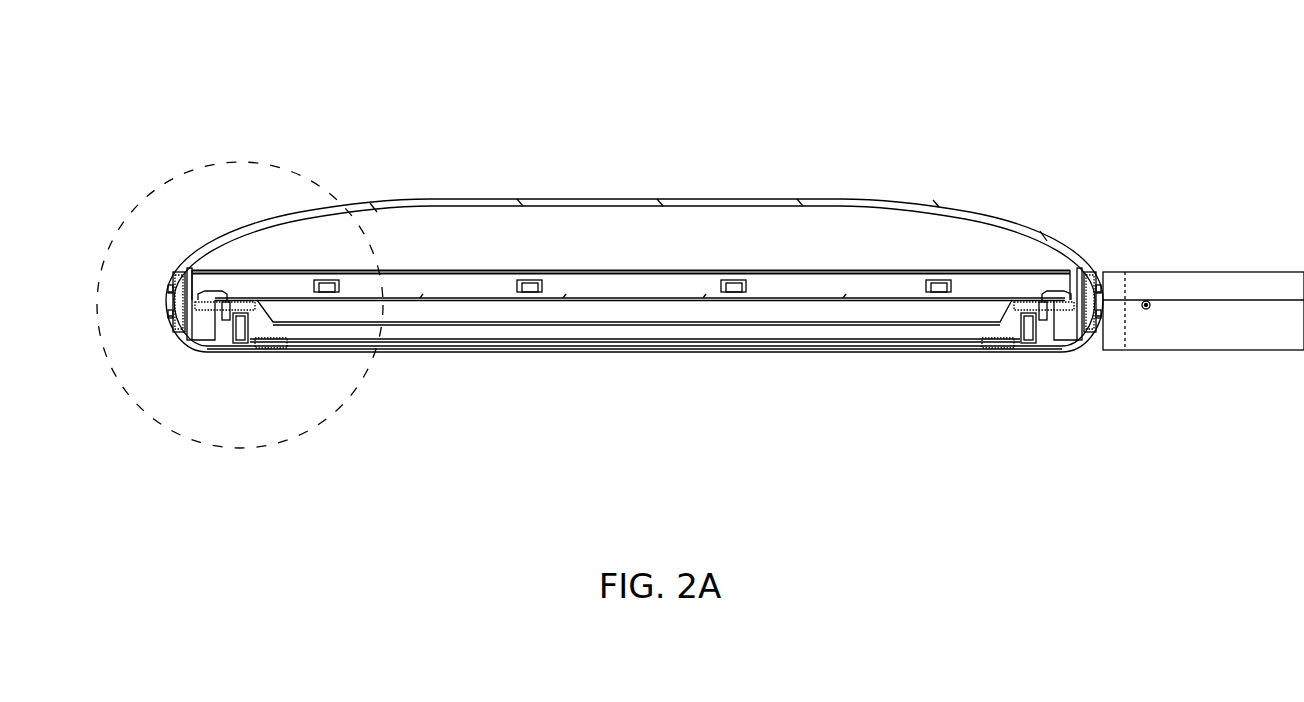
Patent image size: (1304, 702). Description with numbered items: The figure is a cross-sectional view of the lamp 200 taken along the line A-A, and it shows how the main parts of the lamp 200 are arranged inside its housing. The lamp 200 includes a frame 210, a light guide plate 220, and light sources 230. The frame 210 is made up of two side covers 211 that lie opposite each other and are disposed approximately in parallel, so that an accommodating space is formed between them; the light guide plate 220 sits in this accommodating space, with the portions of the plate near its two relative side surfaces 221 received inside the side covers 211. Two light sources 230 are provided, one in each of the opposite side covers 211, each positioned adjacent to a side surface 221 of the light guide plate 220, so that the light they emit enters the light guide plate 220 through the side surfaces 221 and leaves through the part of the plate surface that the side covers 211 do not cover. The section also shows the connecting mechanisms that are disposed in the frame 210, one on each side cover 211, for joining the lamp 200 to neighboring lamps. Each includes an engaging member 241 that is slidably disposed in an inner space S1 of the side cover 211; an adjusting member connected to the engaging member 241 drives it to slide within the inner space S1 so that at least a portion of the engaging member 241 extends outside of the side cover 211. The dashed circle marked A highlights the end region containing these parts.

The lamp 200 is at (108, 52).
The line A- A is at (118, 240).
The inner space S1 is at (172, 307).
The engaging member 241 is at (182, 320).
The frame 210 is at (189, 366).
The side covers 211 is at (215, 347).
The side surfaces 221 is at (283, 335).
The light source 230 is at (240, 347).
The light guide plate 220 is at (650, 333).